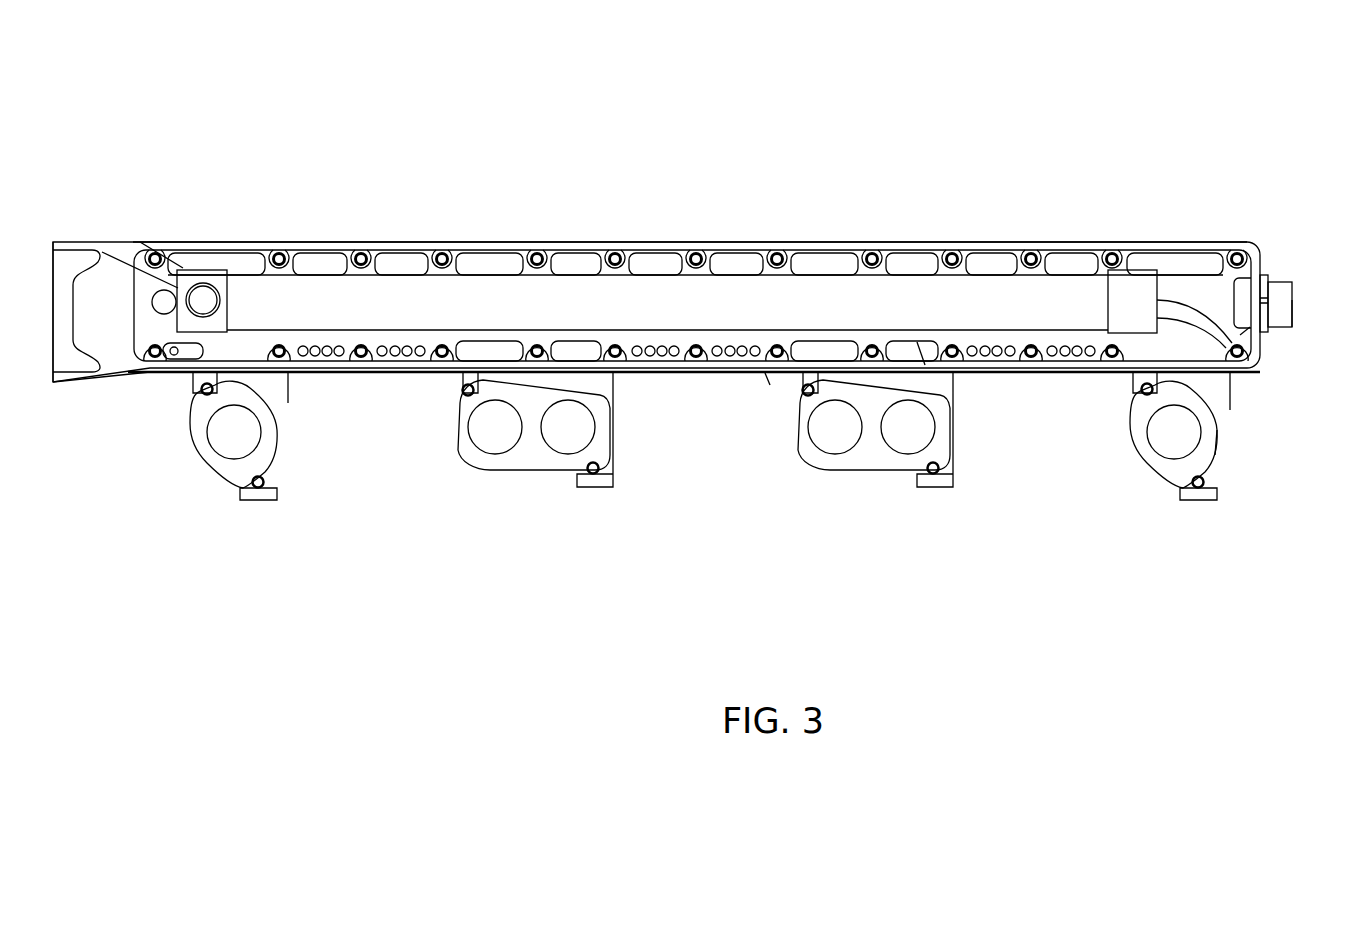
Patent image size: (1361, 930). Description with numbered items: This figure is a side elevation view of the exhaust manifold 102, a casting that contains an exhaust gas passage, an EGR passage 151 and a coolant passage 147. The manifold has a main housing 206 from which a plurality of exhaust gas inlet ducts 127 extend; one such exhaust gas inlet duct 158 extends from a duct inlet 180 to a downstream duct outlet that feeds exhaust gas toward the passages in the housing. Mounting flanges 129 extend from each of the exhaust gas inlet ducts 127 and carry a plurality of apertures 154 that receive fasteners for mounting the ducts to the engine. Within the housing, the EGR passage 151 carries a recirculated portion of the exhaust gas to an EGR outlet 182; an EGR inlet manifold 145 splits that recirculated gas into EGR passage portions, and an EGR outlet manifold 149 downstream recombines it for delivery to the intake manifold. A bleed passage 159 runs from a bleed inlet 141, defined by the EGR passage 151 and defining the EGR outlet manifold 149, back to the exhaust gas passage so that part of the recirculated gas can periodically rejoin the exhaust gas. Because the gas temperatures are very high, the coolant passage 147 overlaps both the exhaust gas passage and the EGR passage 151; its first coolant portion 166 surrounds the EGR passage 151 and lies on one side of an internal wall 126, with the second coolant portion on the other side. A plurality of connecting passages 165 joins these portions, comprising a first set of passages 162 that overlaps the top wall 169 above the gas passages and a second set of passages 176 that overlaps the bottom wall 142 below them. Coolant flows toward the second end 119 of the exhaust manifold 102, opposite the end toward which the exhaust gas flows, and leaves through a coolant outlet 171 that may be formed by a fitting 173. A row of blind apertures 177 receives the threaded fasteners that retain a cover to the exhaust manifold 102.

The exhaust manifold 102 is at (773, 103).
The second end 119 is at (1251, 250).
The internal wall 126 is at (157, 323).
The exhaust gas inlet ducts 127 is at (236, 440).
The mounting flanges 129 is at (272, 445).
The bleed inlet 141 is at (140, 272).
The bottom wall 142 is at (770, 374).
The EGR inlet manifold 145 is at (1157, 270).
The coolant passage 147 is at (1241, 342).
The EGR outlet manifold 149 is at (225, 270).
The EGR passage 151 is at (686, 312).
The apertures 154 is at (201, 390).
The exhaust gas inlet duct 158 is at (1170, 445).
The bleed passage 159 is at (90, 255).
The first set of passages 162 is at (222, 242).
The connecting passages 165 is at (677, 216).
The first coolant portion 166 is at (917, 342).
The top wall 169 is at (895, 242).
The coolant outlet 171 is at (1292, 315).
The fitting 173 is at (1282, 275).
The second set of passages 176 is at (303, 358).
The blind apertures 177 is at (150, 254).
The duct inlet 180 is at (1207, 428).
The EGR outlet 182 is at (157, 290).
The main housing 206 is at (1136, 219).